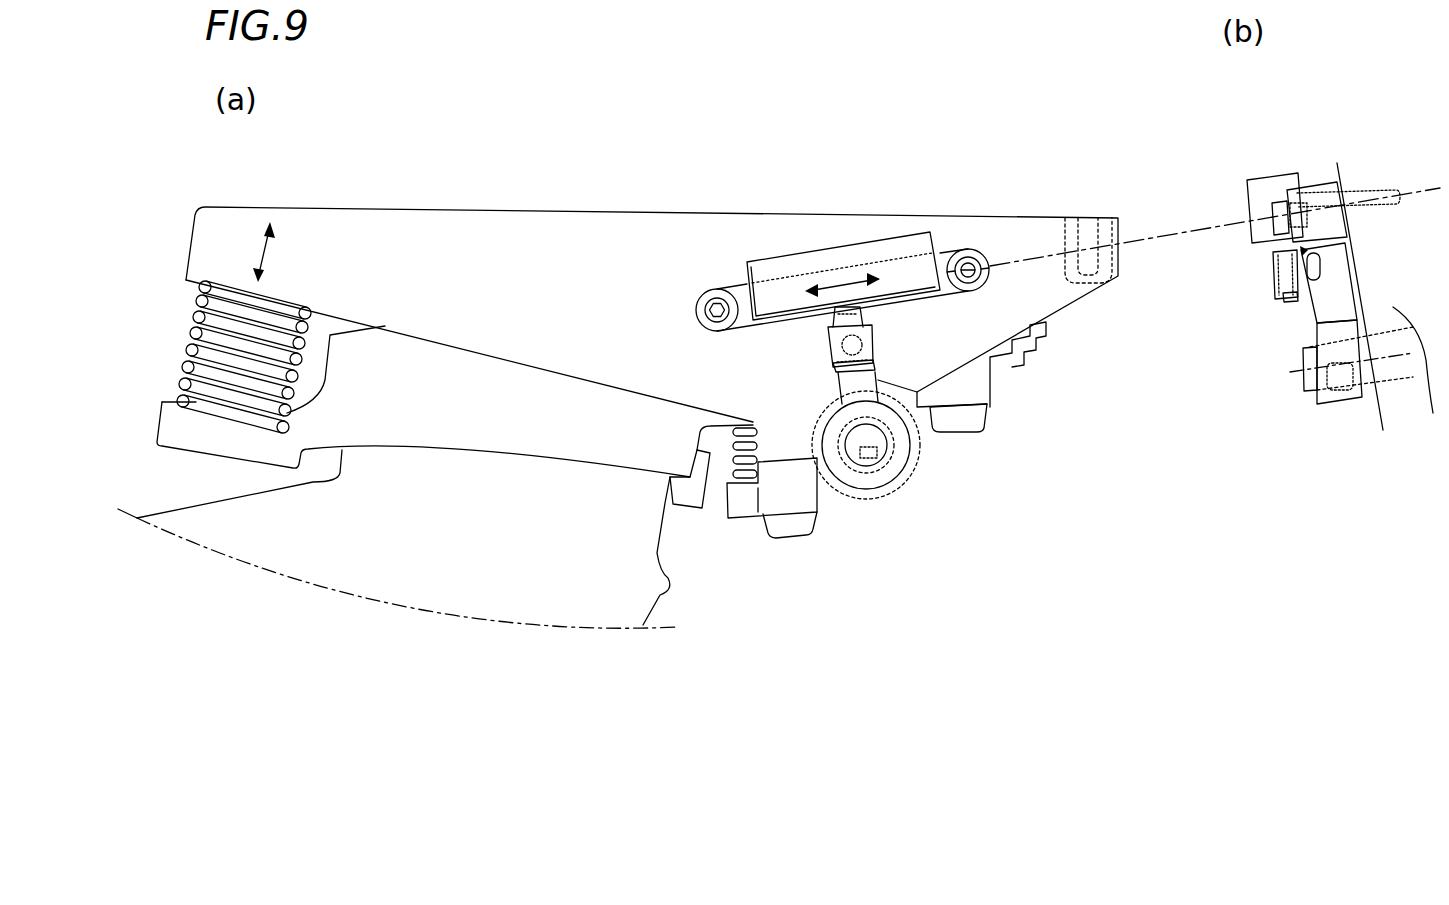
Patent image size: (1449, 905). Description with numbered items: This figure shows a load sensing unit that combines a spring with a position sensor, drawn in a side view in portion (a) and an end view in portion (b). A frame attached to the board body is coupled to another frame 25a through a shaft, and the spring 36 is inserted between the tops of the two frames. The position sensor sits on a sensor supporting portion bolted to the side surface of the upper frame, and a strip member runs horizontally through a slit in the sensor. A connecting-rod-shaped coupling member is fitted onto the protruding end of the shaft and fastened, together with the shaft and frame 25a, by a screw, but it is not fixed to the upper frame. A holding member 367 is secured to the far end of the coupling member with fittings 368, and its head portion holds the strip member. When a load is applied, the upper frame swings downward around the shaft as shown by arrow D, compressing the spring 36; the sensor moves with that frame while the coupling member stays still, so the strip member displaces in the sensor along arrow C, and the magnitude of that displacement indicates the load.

The spring 36 is at (190, 330).
The frame 25a is at (160, 420).
The holding member 367 is at (1272, 254).
The fittings 368 is at (1306, 250).
The arrow C is at (838, 283).
The arrow D is at (267, 250).